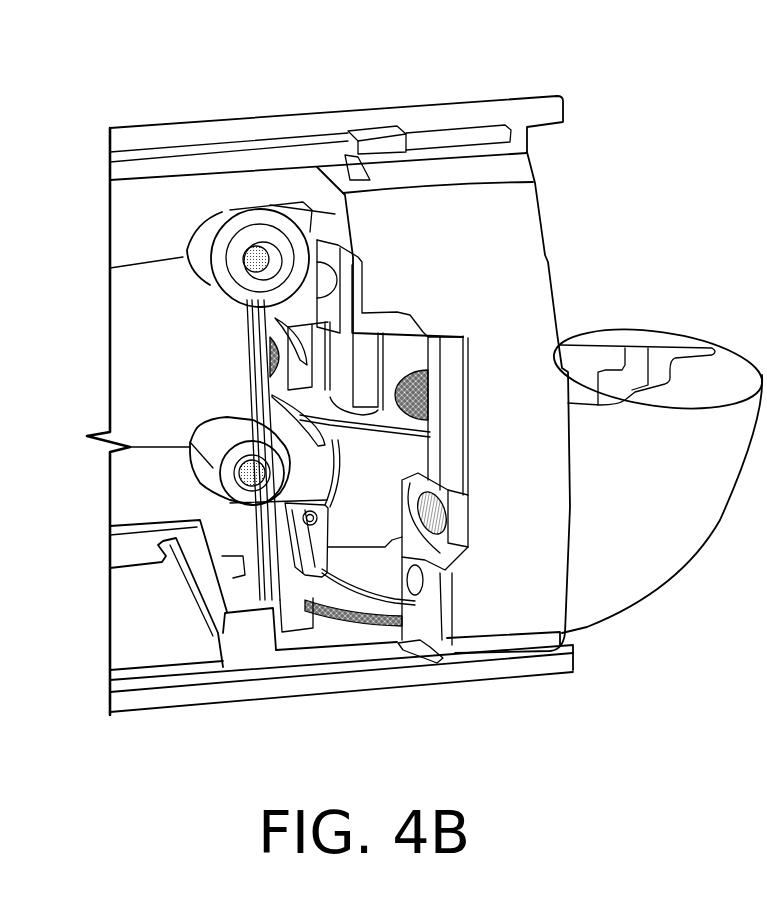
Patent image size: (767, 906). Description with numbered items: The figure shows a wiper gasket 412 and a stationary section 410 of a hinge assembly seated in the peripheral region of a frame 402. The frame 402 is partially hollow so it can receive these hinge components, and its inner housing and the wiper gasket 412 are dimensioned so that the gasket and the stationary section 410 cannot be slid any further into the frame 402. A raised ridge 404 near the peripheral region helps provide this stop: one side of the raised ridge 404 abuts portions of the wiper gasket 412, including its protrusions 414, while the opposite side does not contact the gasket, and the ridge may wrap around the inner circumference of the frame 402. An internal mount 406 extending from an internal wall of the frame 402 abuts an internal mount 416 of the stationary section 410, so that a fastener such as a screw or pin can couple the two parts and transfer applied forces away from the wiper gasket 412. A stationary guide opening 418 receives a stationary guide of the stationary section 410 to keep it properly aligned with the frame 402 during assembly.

The frame 402 is at (560, 117).
The raised ridge 404 is at (258, 400).
The internal mount 406 is at (230, 215).
The stationary section 410 is at (628, 338).
The wiper gasket 412 is at (357, 623).
The protrusions 414 is at (268, 352).
The internal mount 416 is at (273, 232).
The stationary guide opening 418 is at (403, 642).